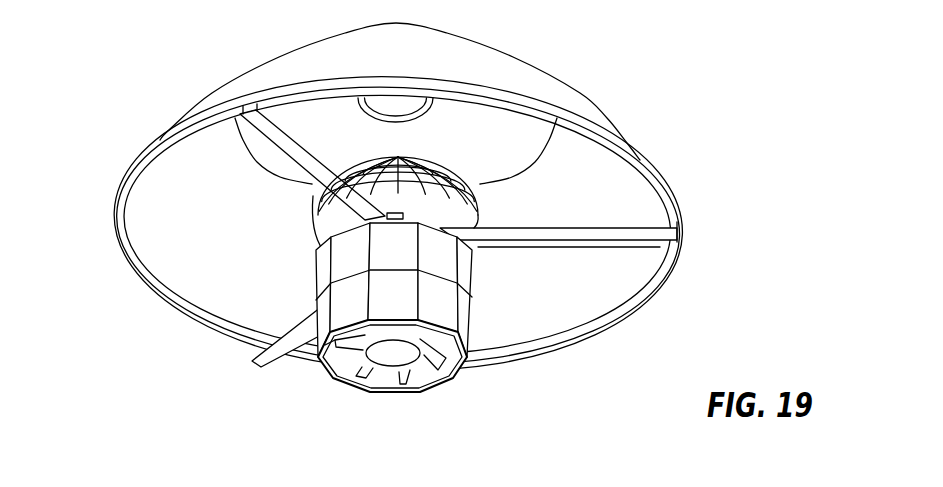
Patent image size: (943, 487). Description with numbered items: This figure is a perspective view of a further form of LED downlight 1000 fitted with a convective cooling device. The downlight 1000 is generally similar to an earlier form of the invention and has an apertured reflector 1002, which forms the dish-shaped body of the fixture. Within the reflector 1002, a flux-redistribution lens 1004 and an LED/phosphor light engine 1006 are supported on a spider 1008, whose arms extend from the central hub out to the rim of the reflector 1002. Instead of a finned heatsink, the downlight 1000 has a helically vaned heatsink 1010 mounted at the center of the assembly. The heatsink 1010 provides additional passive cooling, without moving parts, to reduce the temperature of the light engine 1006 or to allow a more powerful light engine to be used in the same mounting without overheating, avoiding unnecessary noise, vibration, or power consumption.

The downlight 1000 is at (748, 73).
The apertured reflector 1002 is at (414, 202).
The flux-redistribution lens 1004 is at (572, 184).
The LED/phosphor light engine 1006 is at (236, 134).
The spider 1008 is at (363, 235).
The helically vaned heatsink 1010 is at (269, 326).